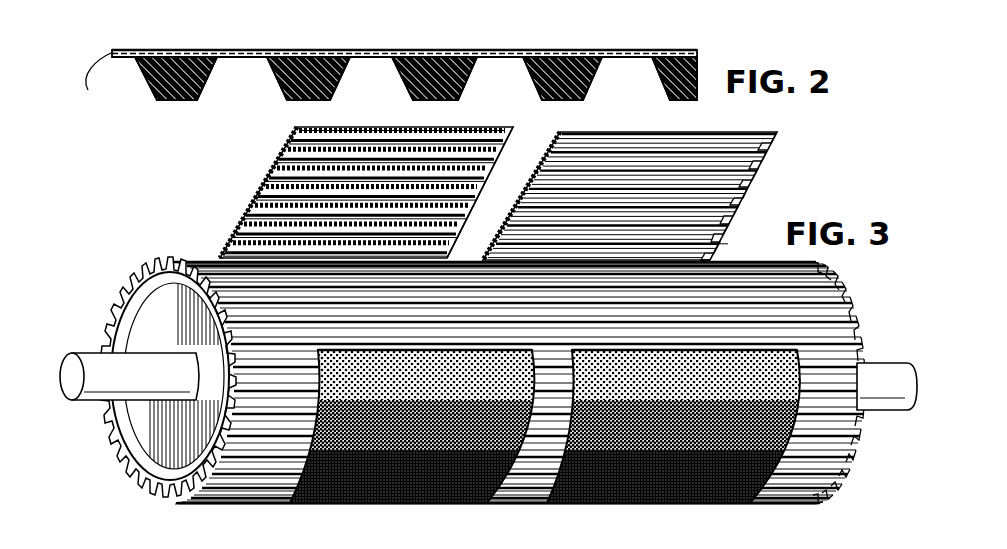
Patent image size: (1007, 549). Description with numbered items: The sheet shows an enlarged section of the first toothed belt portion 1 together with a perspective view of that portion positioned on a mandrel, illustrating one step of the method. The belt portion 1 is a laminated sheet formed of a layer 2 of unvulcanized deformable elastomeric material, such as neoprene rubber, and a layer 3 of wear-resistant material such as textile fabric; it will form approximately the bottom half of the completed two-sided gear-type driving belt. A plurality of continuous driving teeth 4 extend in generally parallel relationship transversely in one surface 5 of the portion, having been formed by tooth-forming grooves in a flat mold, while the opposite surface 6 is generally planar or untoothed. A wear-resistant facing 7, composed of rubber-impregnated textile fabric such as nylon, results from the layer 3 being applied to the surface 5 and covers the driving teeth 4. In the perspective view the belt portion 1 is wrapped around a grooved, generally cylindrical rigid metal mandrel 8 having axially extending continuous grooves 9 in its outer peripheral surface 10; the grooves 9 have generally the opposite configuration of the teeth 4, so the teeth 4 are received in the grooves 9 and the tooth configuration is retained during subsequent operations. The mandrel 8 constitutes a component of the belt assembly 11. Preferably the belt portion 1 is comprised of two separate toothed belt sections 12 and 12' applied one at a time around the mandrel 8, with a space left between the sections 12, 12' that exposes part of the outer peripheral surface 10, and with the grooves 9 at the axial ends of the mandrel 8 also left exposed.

In FIG. 2, the toothed belt portion 1 is at (698, 52).
In FIG. 3, the toothed belt portion 1 is at (243, 219).
In FIG. 2, the layer of unvulcanized deformable elastomeric material 2 is at (524, 56).
In FIG. 2, the layer of wear-resistant material 3 is at (99, 81).
In FIG. 2, the driving teeth 4 is at (178, 96).
In FIG. 3, the driving teeth 4 is at (283, 150).
In FIG. 2, the surface 5 is at (222, 58).
In FIG. 3, the surface 5 is at (515, 154).
In FIG. 2, the opposite surface 6 is at (640, 56).
In FIG. 3, the opposite surface 6 is at (298, 130).
In FIG. 2, the wear-resistant facing 7 is at (278, 86).
In FIG. 3, the wear-resistant facing 7 is at (440, 150).
In FIG. 3, the mandrel 8 is at (136, 272).
In FIG. 3, the grooves 9 is at (190, 256).
In FIG. 3, the outer peripheral surface 10 is at (843, 315).
In FIG. 3, the belt assembly 11 is at (213, 253).
In FIG. 3, the toothed belt section 12 is at (415, 442).
In FIG. 3, the toothed belt section 12' is at (675, 442).